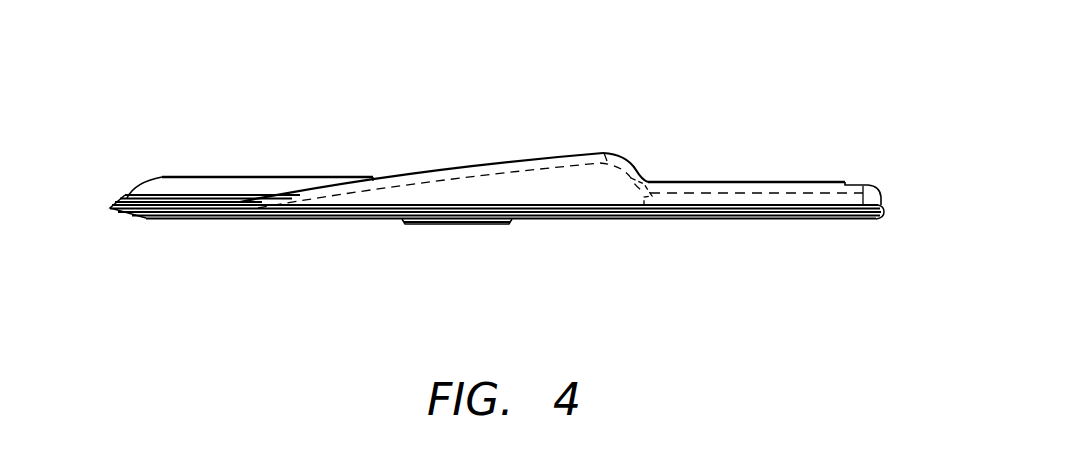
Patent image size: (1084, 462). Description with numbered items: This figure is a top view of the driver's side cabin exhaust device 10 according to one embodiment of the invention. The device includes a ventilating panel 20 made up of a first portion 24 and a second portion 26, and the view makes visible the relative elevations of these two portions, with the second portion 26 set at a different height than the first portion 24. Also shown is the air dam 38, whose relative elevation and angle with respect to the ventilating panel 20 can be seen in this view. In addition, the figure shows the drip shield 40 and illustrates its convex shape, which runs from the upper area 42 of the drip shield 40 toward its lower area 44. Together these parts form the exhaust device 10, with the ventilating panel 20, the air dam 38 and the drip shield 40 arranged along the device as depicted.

The driver's side cabin exhaust device 10 is at (541, 243).
The ventilating panel 20 is at (879, 195).
The first portion 24 is at (783, 190).
The second portion 26 is at (509, 178).
The air dam 38 is at (635, 168).
The drip shield 40 is at (167, 184).
The upper area 42 is at (138, 197).
The lower area 44 is at (207, 177).